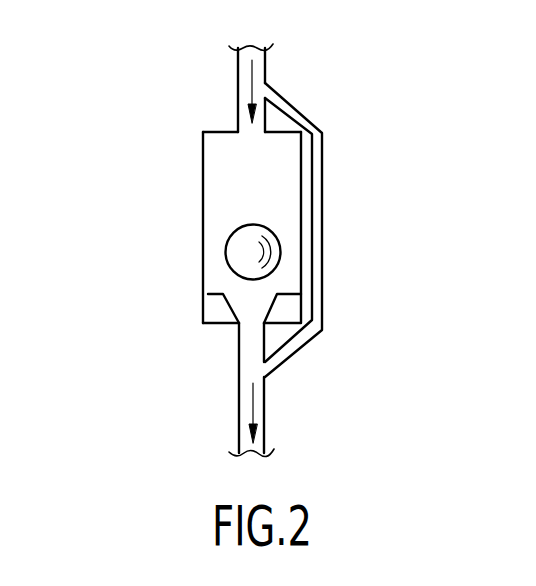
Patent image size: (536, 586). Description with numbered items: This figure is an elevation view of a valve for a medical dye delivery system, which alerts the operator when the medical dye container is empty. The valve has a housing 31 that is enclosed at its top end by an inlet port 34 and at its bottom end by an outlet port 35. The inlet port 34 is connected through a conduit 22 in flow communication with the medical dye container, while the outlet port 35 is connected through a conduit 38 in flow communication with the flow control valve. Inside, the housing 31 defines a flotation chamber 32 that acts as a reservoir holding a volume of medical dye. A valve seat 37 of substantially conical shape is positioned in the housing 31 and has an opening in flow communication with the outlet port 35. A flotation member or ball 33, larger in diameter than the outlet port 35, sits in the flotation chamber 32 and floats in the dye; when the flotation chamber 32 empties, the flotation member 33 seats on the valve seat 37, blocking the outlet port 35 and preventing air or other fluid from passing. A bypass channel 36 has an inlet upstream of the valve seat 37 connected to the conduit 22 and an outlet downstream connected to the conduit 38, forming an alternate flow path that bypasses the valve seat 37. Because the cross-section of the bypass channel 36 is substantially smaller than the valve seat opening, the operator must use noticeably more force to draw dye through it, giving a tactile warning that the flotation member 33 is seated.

The conduit 22 is at (265, 69).
The housing 31 is at (203, 215).
The flotation chamber 32 is at (227, 162).
The flotation member 33 is at (225, 252).
The inlet port 34 is at (218, 132).
The outlet port 35 is at (242, 330).
The bypass channel 36 is at (322, 163).
The valve seat 37 is at (232, 311).
The conduit 38 is at (265, 397).